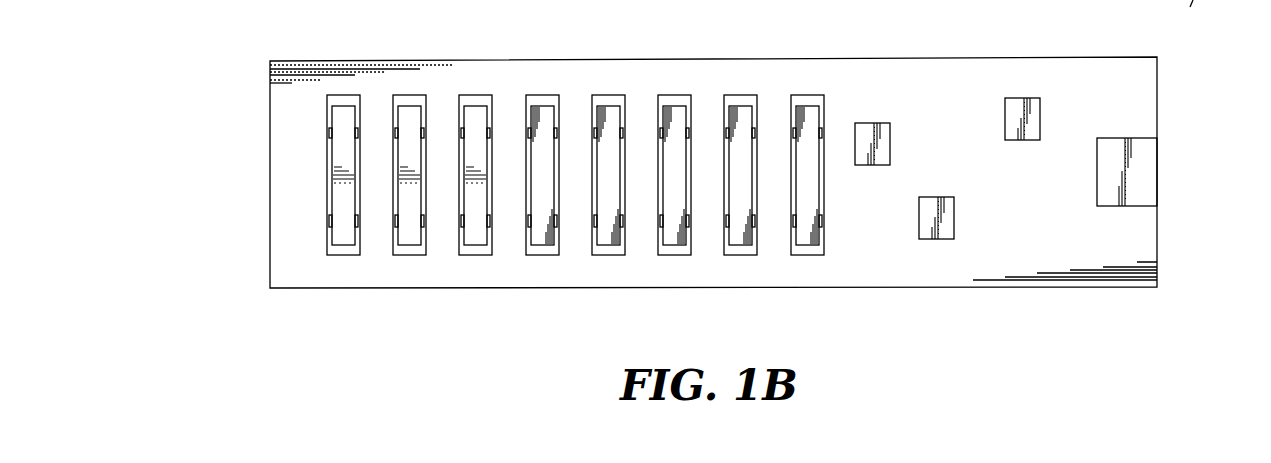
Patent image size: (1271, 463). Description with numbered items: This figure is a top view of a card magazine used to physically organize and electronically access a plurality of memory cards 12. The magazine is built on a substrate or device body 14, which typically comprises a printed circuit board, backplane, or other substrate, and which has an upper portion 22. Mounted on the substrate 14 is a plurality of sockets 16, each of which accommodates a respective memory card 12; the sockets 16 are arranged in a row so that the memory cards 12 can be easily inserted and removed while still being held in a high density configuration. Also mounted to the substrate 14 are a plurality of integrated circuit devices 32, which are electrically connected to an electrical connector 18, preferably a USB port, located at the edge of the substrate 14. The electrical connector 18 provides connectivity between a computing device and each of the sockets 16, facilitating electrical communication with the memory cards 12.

The memory cards 12 is at (477, 238).
The substrate or device body 14 is at (953, 104).
The sockets 16 is at (808, 97).
The electrical connector 18 is at (1110, 138).
The upper portion 22 is at (278, 164).
The integrated circuit devices 32 is at (934, 197).